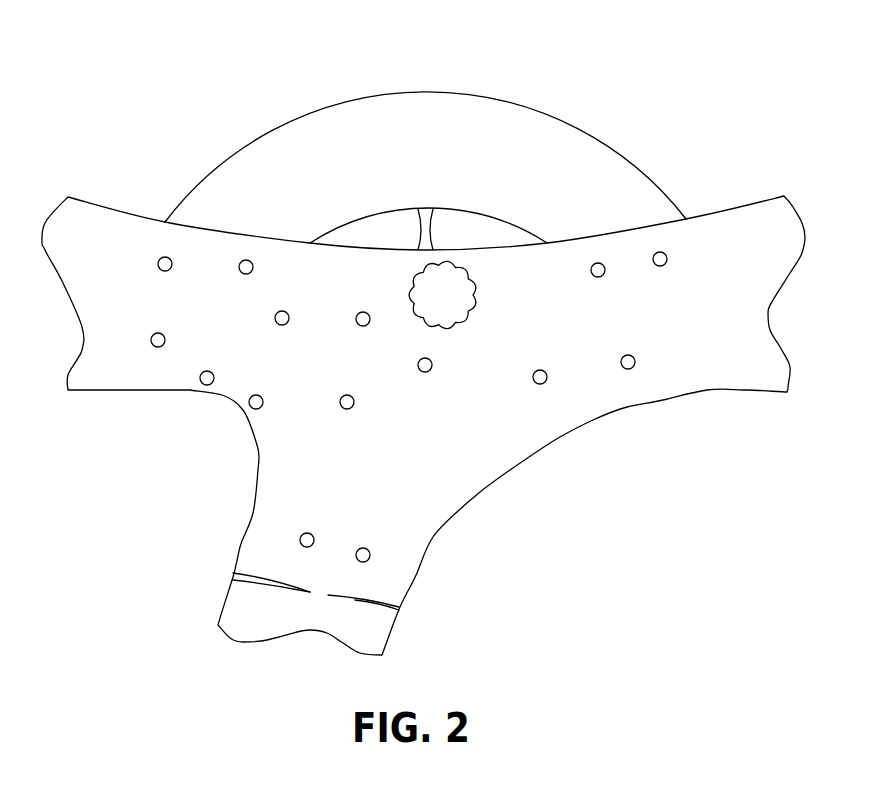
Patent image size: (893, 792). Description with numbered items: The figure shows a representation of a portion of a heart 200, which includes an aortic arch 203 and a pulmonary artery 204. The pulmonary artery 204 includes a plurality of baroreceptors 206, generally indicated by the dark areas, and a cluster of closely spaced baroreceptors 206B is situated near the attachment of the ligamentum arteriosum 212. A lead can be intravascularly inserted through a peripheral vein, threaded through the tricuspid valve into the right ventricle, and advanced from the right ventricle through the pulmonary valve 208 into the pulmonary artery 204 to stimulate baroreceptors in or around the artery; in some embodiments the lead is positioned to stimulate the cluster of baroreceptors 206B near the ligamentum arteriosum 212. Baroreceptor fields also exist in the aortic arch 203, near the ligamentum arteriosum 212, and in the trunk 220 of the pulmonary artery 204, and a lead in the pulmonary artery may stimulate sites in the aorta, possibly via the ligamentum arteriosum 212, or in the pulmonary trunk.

The heart 200 is at (133, 106).
The aortic arch 203 is at (518, 122).
The pulmonary artery 204 is at (562, 420).
The baroreceptors 206 is at (158, 340).
The cluster of closely spaced baroreceptors 206B is at (477, 300).
The pulmonary valve 208 is at (363, 602).
The ligamentum arteriosum 212 is at (432, 228).
The trunk 220 is at (253, 553).